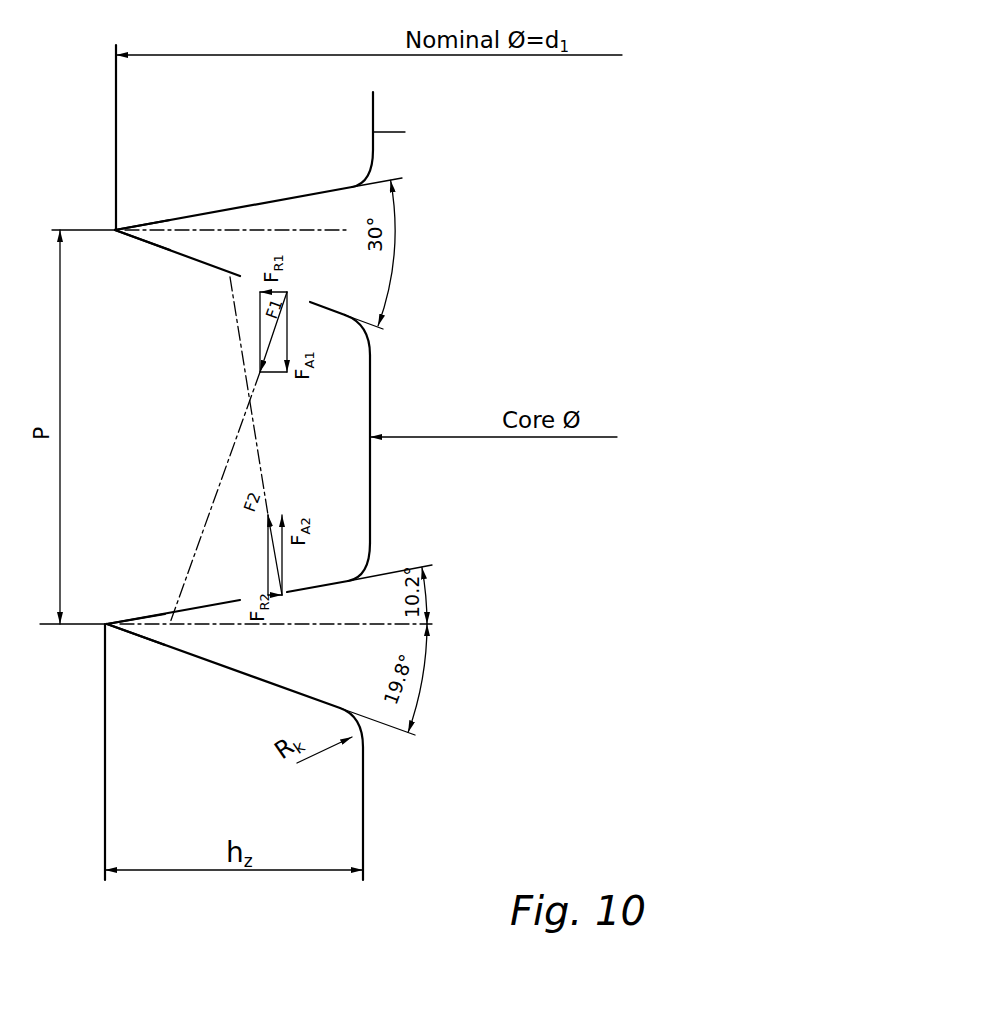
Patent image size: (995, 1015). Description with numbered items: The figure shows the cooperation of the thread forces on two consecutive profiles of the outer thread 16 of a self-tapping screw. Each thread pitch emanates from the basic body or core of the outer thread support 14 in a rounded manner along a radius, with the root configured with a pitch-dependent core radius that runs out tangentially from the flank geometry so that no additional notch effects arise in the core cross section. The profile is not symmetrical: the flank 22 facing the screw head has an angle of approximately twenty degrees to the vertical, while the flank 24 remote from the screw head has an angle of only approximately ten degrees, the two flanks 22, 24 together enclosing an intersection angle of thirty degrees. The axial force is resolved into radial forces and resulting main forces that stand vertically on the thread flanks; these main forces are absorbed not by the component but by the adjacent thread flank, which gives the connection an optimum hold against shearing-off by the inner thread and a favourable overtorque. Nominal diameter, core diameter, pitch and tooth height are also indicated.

The outer thread support 14 is at (373, 131).
The outer thread 16 is at (212, 152).
The flank 22 is at (176, 256).
The flank 24 is at (151, 228).